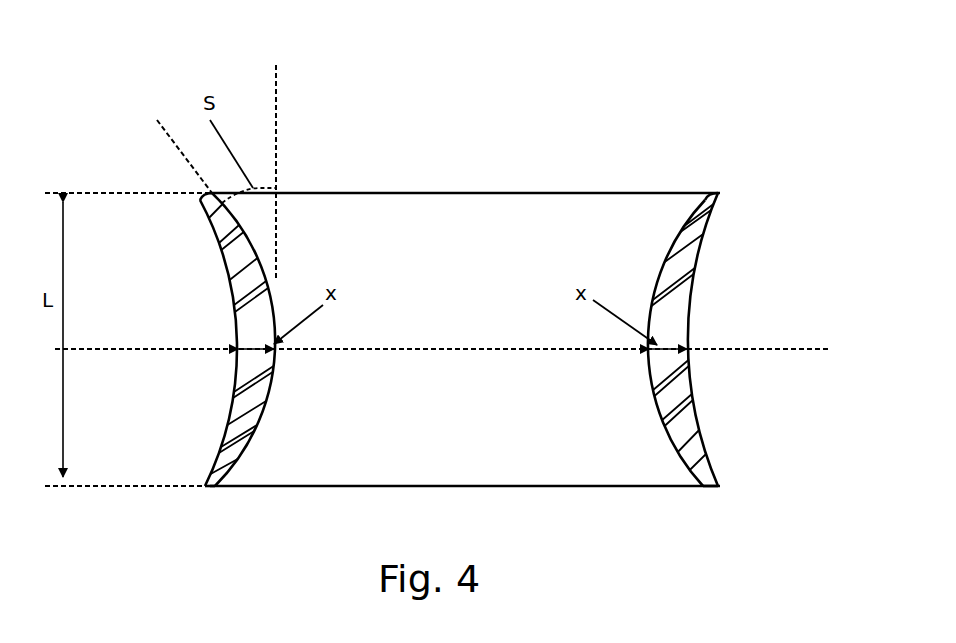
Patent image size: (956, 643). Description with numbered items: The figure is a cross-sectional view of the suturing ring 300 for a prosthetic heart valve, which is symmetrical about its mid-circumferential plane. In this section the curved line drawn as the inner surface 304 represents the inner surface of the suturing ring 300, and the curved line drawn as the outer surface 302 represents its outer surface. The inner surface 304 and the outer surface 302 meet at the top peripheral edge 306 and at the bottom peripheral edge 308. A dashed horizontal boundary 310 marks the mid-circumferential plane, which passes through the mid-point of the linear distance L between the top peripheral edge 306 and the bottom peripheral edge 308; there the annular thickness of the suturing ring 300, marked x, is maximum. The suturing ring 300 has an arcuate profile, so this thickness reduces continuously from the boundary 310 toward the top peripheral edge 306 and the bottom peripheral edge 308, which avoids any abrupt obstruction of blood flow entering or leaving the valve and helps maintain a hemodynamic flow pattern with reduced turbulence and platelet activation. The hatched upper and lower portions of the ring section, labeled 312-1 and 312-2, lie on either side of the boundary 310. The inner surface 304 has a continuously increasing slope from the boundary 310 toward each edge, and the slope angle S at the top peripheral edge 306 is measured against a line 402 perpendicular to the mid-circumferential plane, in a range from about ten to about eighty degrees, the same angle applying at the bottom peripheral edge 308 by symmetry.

The suturing ring 300 is at (562, 115).
The outer surface 302 is at (232, 375).
The inner surface 304 is at (270, 398).
The top peripheral edge 306 is at (210, 193).
The bottom peripheral edge 308 is at (205, 487).
The boundary of the mid-circumferential plane 310 is at (80, 349).
The upper portion of lens 312-1 is at (242, 240).
The lower portion of lens 312-2 is at (238, 436).
The line perpendicular to the mid-circumferential plane boundary 402 is at (277, 135).